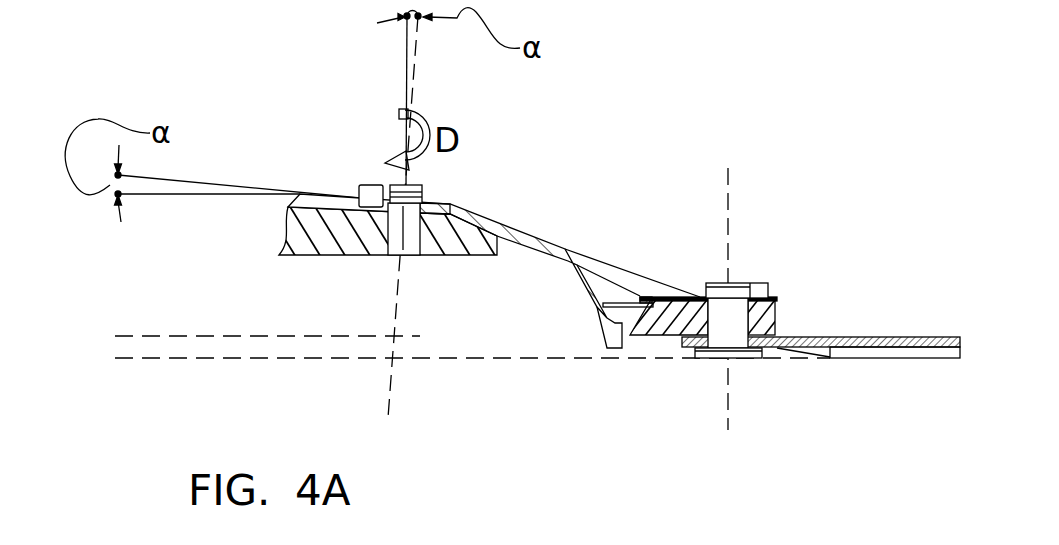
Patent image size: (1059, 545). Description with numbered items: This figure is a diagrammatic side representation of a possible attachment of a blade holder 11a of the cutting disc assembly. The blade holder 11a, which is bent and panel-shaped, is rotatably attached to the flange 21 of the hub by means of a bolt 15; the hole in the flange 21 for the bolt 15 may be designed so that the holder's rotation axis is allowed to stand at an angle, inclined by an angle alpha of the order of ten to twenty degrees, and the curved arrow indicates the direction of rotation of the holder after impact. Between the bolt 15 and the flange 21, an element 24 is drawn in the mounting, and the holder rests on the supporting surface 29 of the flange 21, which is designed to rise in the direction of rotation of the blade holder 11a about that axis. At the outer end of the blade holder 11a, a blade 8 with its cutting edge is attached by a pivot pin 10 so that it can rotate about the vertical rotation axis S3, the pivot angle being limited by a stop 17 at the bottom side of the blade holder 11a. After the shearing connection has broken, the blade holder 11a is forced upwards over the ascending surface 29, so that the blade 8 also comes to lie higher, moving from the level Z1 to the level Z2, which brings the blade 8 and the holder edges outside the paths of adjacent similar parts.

The blade 8 is at (885, 353).
The pivot pin 10 is at (728, 318).
The blade holder 11a is at (592, 187).
The bolt 15 is at (413, 195).
The stop 17 is at (610, 337).
The flange 21 is at (345, 231).
The spacer 24 is at (368, 197).
The supporting surface 29 is at (332, 208).
The lower blade level Z1 is at (435, 358).
The raised blade level Z2 is at (150, 336).
The rotation axis S3 is at (729, 277).